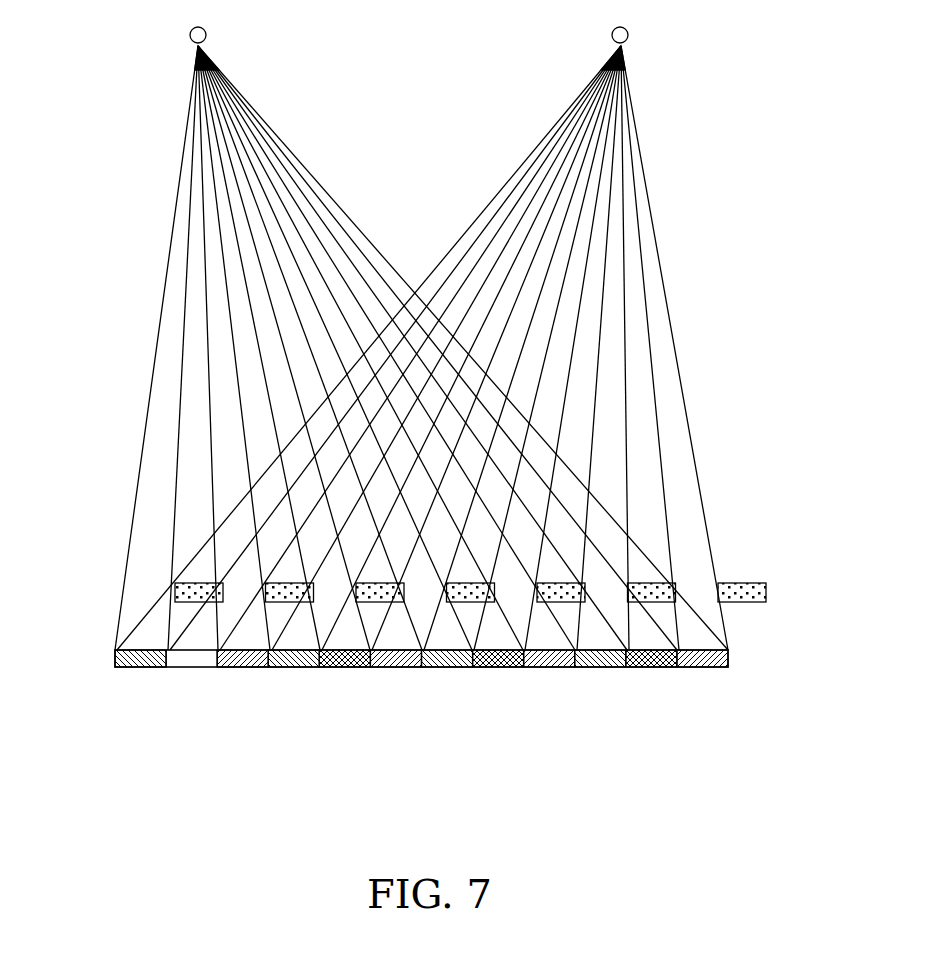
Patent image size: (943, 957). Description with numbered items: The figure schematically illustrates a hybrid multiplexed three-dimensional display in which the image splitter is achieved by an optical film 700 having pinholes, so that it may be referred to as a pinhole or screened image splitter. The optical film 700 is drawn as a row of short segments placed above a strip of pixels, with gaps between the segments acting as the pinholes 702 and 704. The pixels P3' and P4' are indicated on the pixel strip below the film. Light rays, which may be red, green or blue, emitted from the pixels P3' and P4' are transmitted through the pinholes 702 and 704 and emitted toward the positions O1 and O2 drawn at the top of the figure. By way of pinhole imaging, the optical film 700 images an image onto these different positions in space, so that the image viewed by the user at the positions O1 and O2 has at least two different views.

The optical film 700 is at (767, 588).
The pinhole 702 is at (243, 583).
The pinhole 704 is at (333, 583).
The position O1 is at (202, 39).
The position O2 is at (618, 39).
The pixel P3' is at (243, 679).
The pixel P4' is at (294, 679).